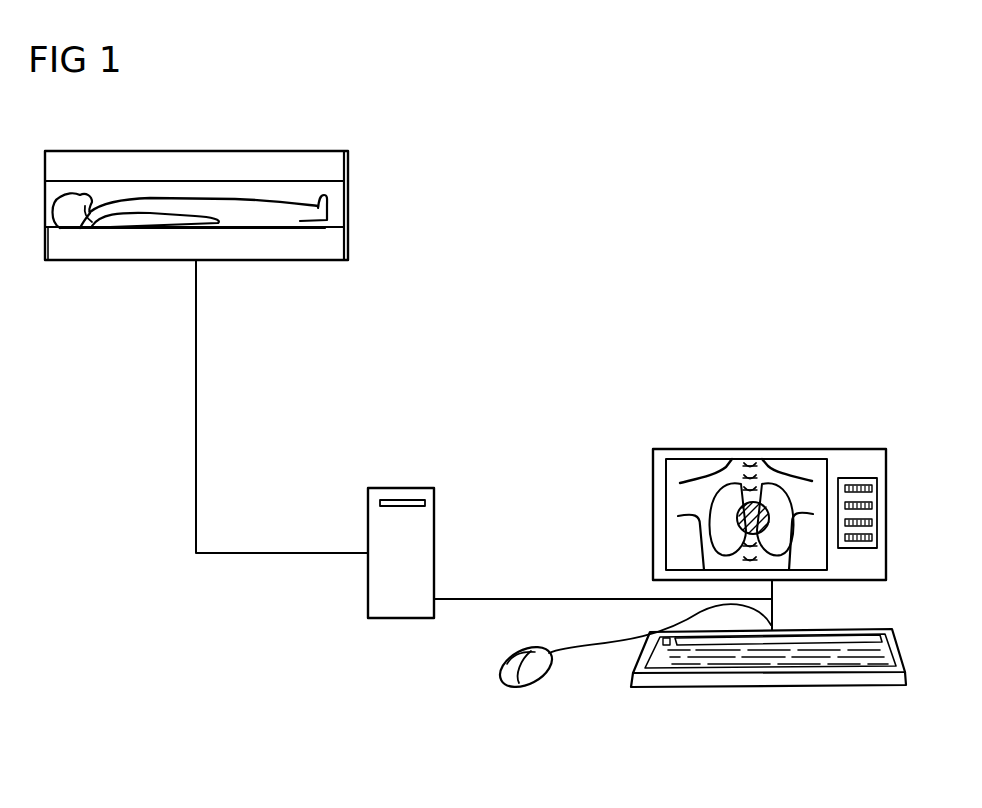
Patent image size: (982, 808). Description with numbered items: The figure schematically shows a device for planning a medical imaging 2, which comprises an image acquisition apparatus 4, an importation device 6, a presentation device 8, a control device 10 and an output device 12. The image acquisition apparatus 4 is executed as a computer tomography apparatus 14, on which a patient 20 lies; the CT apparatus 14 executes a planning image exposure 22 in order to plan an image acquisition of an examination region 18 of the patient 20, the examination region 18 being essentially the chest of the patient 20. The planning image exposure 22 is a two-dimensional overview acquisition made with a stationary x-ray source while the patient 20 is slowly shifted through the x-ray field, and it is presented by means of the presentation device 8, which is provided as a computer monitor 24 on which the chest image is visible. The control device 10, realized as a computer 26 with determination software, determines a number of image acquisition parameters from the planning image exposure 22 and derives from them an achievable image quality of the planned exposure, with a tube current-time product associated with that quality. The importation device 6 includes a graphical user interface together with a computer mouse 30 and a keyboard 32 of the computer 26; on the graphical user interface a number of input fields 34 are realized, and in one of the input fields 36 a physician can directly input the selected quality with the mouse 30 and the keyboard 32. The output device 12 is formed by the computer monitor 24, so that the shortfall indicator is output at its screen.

The medical imaging planning device 2 is at (596, 255).
The image acquisition apparatus 4 is at (364, 196).
The importation device 6 is at (570, 703).
The presentation device 8 is at (786, 436).
The control device 10 is at (422, 476).
The output device 12 is at (647, 493).
The computer tomography apparatus 14 is at (278, 260).
The examination region 18 is at (147, 186).
The patient 20 is at (265, 214).
The planning image exposure 22 is at (690, 472).
The computer monitor 24 is at (732, 448).
The computer 26 is at (368, 517).
The computer mouse 30 is at (518, 672).
The keyboard 32 is at (780, 677).
The input fields 34 is at (850, 478).
The input field 36 is at (858, 513).